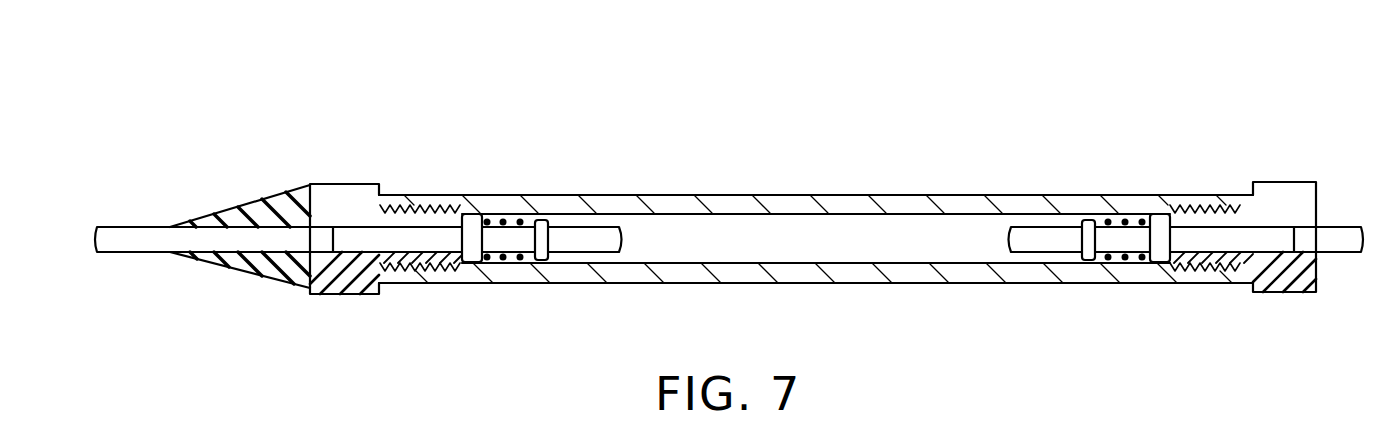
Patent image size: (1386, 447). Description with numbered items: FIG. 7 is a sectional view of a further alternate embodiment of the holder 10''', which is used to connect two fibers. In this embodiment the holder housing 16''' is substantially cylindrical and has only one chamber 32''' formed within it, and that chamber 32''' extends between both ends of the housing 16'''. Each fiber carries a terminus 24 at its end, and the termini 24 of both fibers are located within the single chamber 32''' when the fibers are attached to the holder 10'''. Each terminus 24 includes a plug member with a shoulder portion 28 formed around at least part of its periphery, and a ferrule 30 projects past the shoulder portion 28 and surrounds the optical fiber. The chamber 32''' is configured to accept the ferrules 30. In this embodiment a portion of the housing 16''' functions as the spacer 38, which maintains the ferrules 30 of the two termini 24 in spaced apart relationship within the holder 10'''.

The holder 10''' is at (729, 168).
The housing 16''' is at (816, 207).
The spacer 38 is at (795, 205).
The shoulder portion 28 is at (473, 258).
The terminus 24 is at (518, 287).
The ferrule 30 is at (575, 243).
The chamber 32''' is at (815, 282).